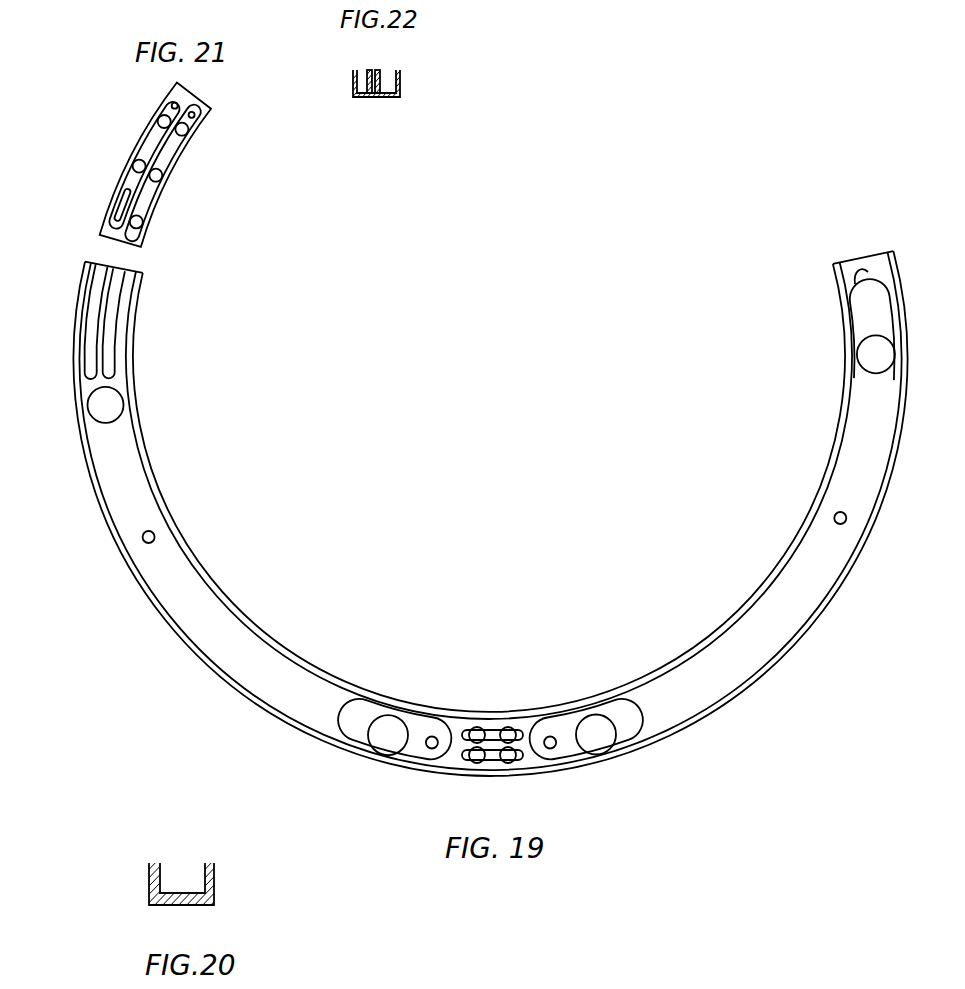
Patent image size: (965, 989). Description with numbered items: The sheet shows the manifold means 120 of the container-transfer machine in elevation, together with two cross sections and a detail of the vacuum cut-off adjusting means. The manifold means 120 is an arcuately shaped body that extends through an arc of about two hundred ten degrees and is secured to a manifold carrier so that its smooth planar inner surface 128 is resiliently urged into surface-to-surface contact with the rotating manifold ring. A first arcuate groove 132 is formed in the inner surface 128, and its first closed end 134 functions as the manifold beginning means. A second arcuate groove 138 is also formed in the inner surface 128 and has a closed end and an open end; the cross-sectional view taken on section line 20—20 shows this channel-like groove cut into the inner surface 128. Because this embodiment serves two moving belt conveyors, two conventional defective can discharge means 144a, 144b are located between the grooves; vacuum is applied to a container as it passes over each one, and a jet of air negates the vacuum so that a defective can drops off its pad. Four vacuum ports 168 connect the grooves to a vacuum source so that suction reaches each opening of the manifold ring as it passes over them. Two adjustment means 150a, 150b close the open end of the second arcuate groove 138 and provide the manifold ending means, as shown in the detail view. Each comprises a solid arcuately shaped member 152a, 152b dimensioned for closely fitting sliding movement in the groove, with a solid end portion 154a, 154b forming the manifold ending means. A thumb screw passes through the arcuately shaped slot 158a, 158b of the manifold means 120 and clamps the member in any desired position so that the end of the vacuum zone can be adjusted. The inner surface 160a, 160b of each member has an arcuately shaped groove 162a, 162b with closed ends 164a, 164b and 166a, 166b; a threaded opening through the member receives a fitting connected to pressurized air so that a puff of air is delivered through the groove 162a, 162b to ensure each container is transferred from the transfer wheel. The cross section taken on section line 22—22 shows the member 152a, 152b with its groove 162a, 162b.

In FIG. 19, the manifold means 120 is at (782, 690).
In FIG. 19, the inner surface 128 is at (845, 390).
In FIG. 20, the inner surface 128 is at (155, 863).
In FIG. 19, the first arcuate groove 132 is at (848, 472).
In FIG. 19, the first closed end 134 is at (858, 279).
In FIG. 20, the second arcuate groove 138 is at (178, 883).
In FIG. 19, the defective can discharge means 144a is at (517, 771).
In FIG. 19, the defective can discharge means 144b is at (476, 712).
In FIG. 21, the adjustment means 150a is at (153, 81).
In FIG. 21, the adjustment means 150b is at (224, 124).
In FIG. 21, the arcuately shaped member 152a is at (158, 108).
In FIG. 22, the arcuately shaped member 152a is at (362, 97).
In FIG. 21, the arcuately shaped member 152b is at (187, 138).
In FIG. 22, the arcuately shaped member 152b is at (385, 97).
In FIG. 21, the solid end portion 154a is at (110, 238).
In FIG. 21, the solid end portion 154b is at (130, 255).
In FIG. 19, the arcuately shaped slot 158a is at (100, 292).
In FIG. 19, the arcuately shaped slot 158b is at (118, 292).
In FIG. 21, the inner surface 160a is at (108, 222).
In FIG. 22, the inner surface 160a is at (357, 80).
In FIG. 21, the inner surface 160b is at (142, 240).
In FIG. 22, the inner surface 160b is at (398, 78).
In FIG. 22, the arcuately shaped groove 162a is at (370, 68).
In FIG. 22, the arcuately shaped groove 162b is at (390, 70).
In FIG. 21, the closed end 164a is at (113, 196).
In FIG. 21, the closed end 164b is at (140, 230).
In FIG. 21, the closed end 166a is at (185, 98).
In FIG. 21, the closed end 166b is at (208, 112).
In FIG. 19, the vacuum port 168 is at (870, 357).
In FIG. 19, the section line 20— 20 is at (230, 567).
In FIG. 21, the section line 22— 22 is at (88, 162).